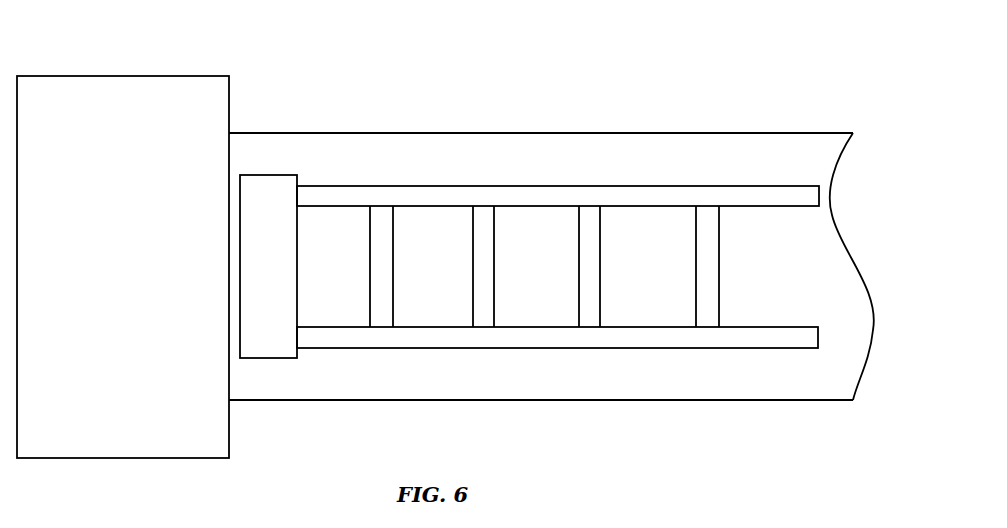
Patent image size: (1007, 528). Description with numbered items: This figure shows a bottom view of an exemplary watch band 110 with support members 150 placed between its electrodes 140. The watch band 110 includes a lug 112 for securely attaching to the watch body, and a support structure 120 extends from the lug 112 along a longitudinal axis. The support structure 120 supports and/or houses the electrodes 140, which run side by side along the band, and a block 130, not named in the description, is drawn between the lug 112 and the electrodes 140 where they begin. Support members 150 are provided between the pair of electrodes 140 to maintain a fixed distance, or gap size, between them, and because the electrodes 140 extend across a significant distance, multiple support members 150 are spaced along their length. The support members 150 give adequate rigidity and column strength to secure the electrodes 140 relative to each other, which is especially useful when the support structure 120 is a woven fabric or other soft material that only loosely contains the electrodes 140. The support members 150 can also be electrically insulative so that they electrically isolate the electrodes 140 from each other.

The watch band 110 is at (437, 109).
The lug 112 is at (113, 75).
The support structure 120 is at (477, 375).
The base block 130 is at (265, 175).
The electrodes 140 is at (832, 198).
The support members 150 is at (473, 313).